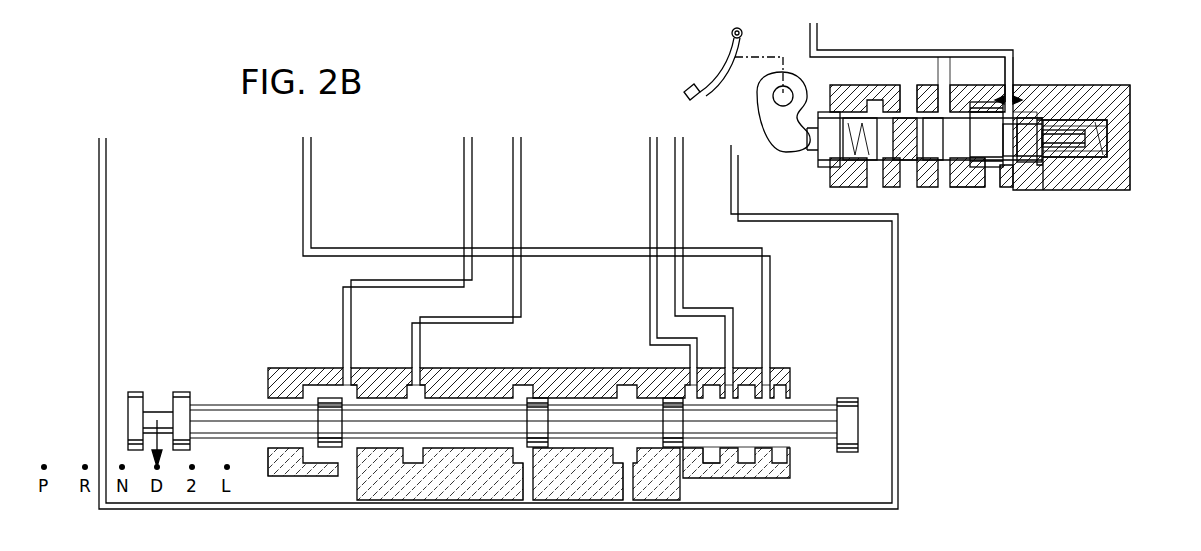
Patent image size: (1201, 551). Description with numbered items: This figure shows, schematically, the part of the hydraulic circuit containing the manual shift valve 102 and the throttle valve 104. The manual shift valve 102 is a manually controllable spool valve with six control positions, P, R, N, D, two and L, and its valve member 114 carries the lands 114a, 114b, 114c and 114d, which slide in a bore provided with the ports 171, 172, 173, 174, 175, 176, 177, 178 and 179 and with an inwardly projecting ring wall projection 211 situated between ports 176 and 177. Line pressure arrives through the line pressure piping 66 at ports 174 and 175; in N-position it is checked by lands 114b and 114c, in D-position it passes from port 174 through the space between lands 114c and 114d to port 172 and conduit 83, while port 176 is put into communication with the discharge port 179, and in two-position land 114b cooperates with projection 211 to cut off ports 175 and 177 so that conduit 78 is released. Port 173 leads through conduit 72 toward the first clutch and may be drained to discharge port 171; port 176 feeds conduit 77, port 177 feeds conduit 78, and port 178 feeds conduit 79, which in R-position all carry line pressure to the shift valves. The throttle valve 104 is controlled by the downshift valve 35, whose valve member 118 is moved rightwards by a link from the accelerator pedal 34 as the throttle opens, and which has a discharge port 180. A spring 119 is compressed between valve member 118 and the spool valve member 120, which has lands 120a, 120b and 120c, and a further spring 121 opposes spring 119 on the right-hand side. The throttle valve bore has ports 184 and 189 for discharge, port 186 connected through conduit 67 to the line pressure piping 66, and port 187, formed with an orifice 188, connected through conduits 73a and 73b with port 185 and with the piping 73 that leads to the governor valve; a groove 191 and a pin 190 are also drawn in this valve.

The accelerator pedal 34 is at (686, 80).
The downshift valve 35 is at (812, 152).
The line pressure piping 66 is at (107, 163).
The conduit 67 is at (952, 188).
The conduit 72 is at (522, 163).
The piping 73 is at (818, 30).
The conduit 73a is at (940, 92).
The conduit 73b is at (1018, 90).
The conduit 77 is at (647, 163).
The conduit 78 is at (684, 163).
The conduit 79 is at (312, 163).
The conduit 83 is at (462, 163).
The manual shift valve 102 is at (315, 362).
The throttle valve 104 is at (1185, 148).
The valve member 114 is at (459, 446).
The valve land 114a is at (862, 384).
The valve land 114b is at (676, 450).
The valve land 114c is at (545, 402).
The valve land 114d is at (330, 450).
The valve member 118 is at (851, 107).
The spring 119 is at (830, 166).
The spool valve member 120 is at (938, 250).
The land 120a is at (988, 190).
The land 120b is at (1047, 190).
The land 120c is at (912, 100).
The spring 121 is at (1093, 120).
The discharge port 171 is at (302, 460).
The port 172 is at (347, 382).
The port 173 is at (419, 382).
The port 174 is at (524, 470).
The port 175 is at (627, 467).
The port 176 is at (688, 377).
The port 177 is at (738, 372).
The port 178 is at (768, 374).
The discharge port 179 is at (783, 454).
The port 180 is at (878, 160).
The port 184 is at (913, 160).
The port 185 is at (986, 102).
The port 186 is at (940, 160).
The port 187 is at (1026, 112).
The orifice 188 is at (1001, 90).
The port 189 is at (1028, 162).
The pin 190 is at (1078, 154).
The groove 191 is at (1012, 156).
The ring wall projection 211 is at (713, 465).